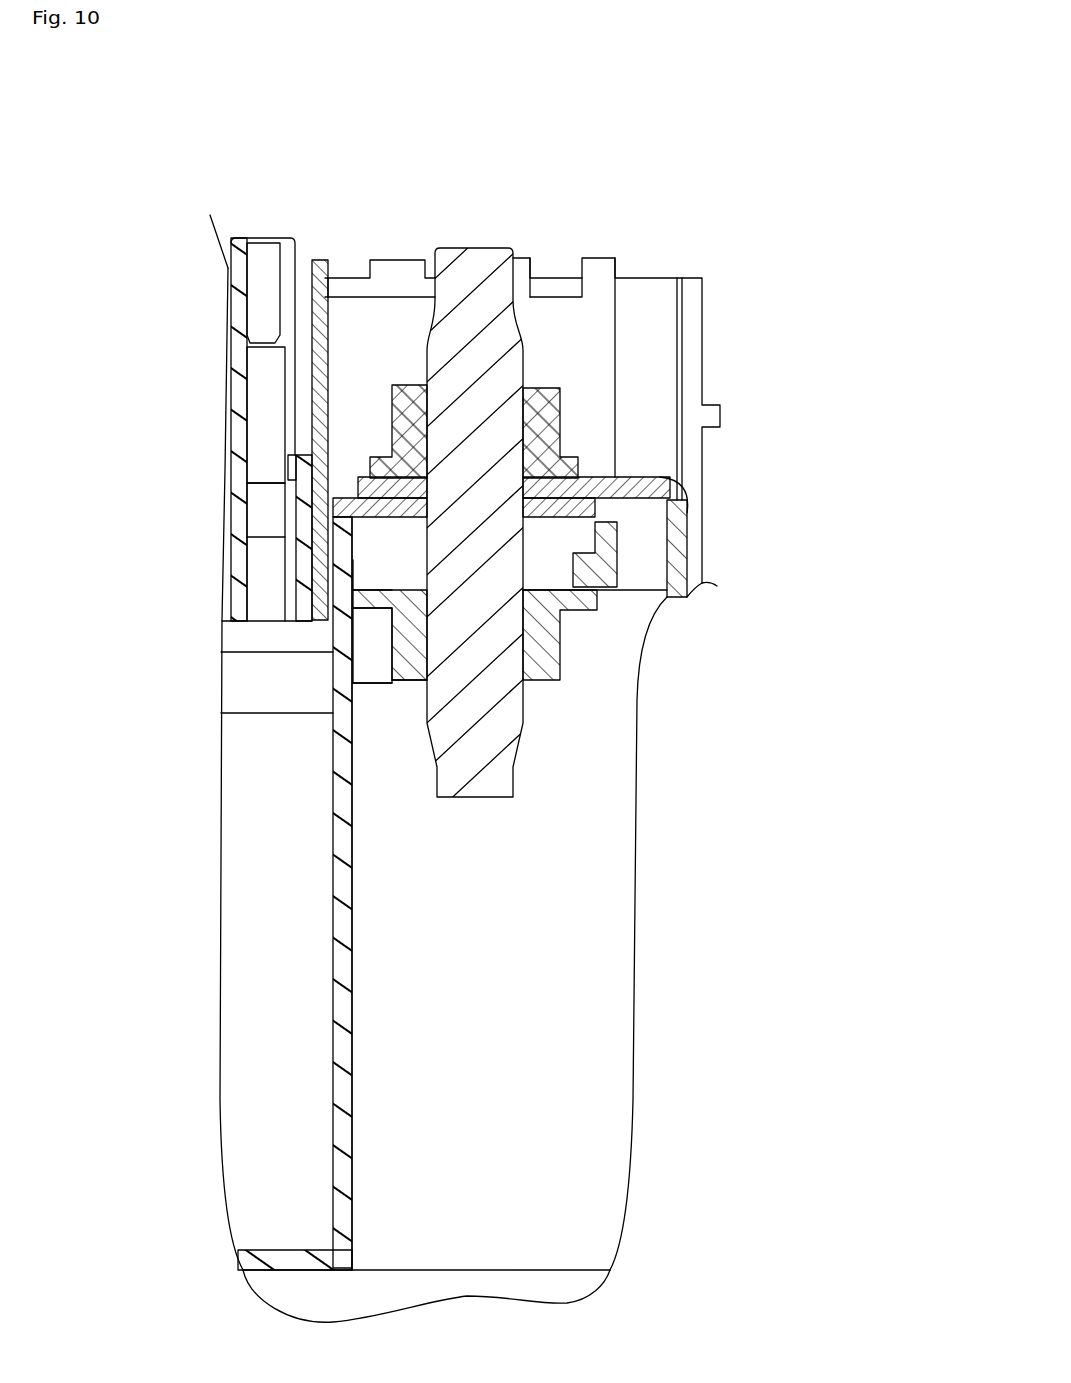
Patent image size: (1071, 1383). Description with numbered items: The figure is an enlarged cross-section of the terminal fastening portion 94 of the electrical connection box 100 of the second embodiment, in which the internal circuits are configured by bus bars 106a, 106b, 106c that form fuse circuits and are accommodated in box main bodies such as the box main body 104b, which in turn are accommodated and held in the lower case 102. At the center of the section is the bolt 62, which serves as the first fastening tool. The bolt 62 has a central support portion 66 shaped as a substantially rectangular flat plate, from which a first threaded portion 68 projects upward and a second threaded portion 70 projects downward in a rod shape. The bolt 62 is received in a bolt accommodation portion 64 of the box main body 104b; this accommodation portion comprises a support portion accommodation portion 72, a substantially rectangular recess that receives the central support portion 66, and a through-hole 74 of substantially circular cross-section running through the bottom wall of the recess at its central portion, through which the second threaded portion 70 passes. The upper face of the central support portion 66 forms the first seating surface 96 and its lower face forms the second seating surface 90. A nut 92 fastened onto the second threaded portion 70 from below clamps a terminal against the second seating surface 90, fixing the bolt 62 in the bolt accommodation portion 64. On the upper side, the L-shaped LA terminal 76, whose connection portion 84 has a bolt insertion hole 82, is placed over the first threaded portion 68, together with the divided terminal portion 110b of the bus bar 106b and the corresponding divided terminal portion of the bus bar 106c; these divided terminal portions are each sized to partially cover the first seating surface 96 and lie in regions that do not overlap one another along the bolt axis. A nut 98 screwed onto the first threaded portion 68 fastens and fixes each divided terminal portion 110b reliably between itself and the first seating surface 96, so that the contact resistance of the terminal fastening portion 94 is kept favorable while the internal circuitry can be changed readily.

The electrical connection box 100 is at (486, 118).
The bolt 62 is at (481, 230).
The first threaded portion 68 is at (500, 382).
The second threaded portion 70 is at (480, 690).
The support portion accommodation portion 72 is at (345, 565).
The through-hole 74 is at (383, 608).
The LA terminal 76 is at (643, 470).
The bolt insertion hole 82 is at (523, 427).
The connection portion 84 is at (573, 467).
The second seating surface 90 is at (392, 683).
The nut 92 is at (388, 693).
The terminal fastening portion 94 is at (386, 362).
The first seating surface 96 is at (392, 546).
The nut 98 is at (558, 387).
The lower case 102 is at (310, 1003).
The box main body 104b is at (200, 438).
The bus bar 106a is at (672, 510).
The bus bar 106b is at (340, 540).
The bus bar 106c is at (675, 488).
The divided terminal portion 110b is at (300, 468).
The bolt accommodation portion 64 is at (313, 485).
The central support portion 66 is at (313, 512).